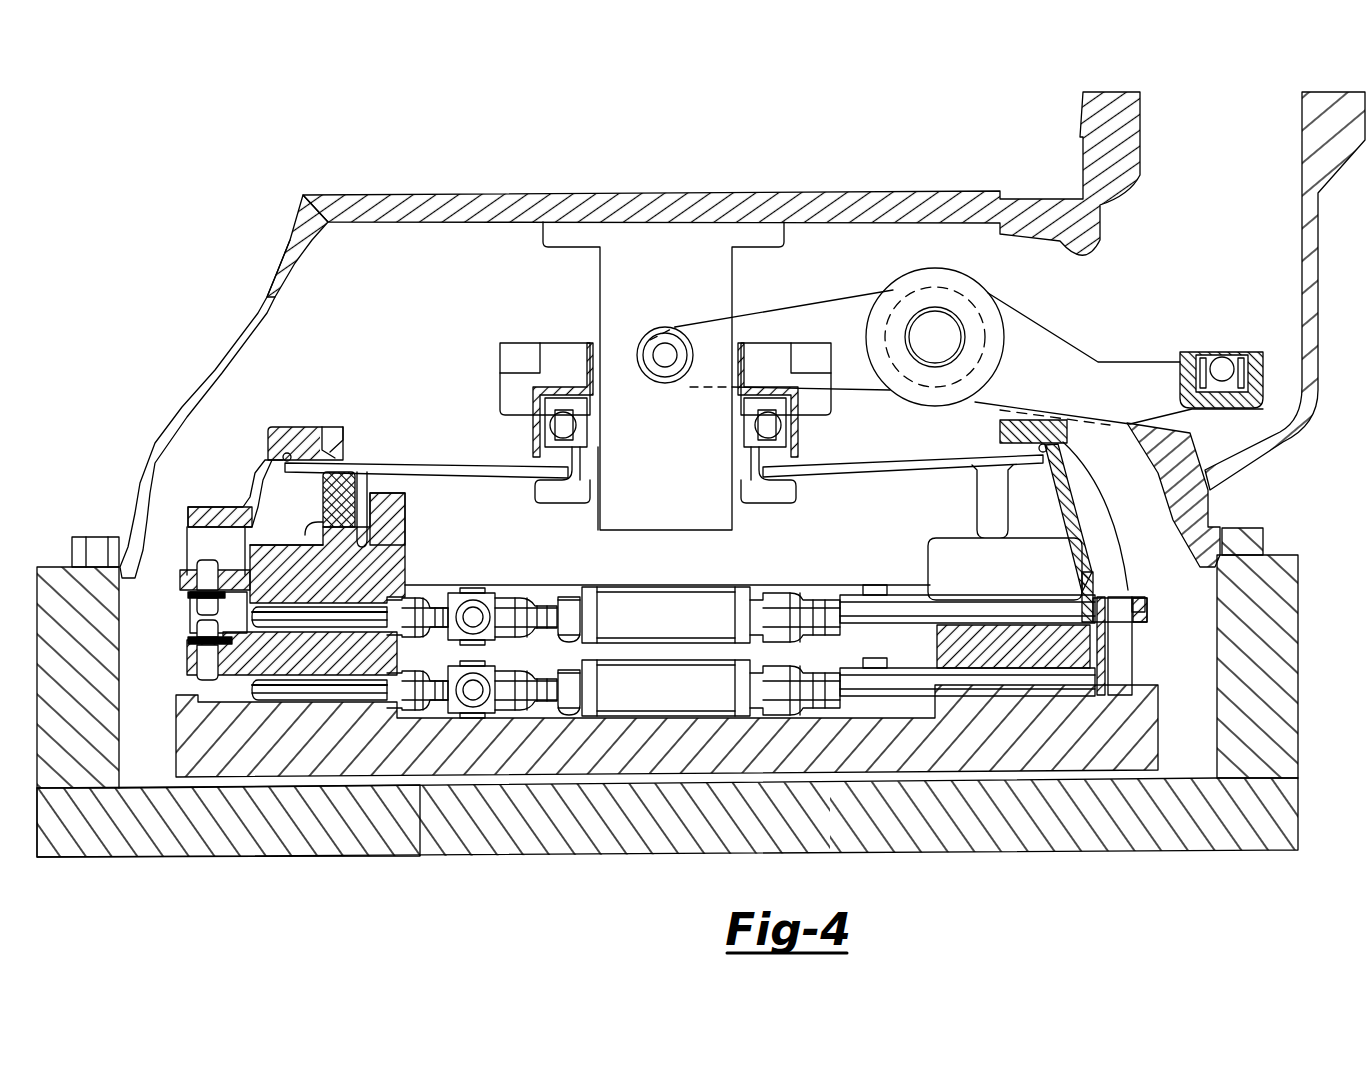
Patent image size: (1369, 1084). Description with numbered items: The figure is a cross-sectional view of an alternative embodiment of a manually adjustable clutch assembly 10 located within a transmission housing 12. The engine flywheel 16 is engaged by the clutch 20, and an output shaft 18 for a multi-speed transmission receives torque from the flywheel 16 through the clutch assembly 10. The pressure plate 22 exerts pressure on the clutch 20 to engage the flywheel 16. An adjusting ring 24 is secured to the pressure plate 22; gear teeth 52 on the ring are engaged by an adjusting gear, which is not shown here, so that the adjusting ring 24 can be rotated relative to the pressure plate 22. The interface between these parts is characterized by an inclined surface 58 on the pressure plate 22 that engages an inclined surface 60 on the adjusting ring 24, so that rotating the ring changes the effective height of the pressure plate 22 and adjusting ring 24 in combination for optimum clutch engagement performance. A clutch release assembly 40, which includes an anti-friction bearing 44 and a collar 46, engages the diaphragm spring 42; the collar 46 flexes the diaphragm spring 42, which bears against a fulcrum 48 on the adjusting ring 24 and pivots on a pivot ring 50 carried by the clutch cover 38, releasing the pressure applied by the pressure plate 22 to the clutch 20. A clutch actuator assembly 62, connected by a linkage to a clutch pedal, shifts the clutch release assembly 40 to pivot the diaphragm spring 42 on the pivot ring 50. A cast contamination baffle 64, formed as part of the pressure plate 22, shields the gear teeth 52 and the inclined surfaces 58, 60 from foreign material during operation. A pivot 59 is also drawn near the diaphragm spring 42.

The clutch assembly 10 is at (316, 354).
The transmission housing 12 is at (279, 274).
The engine flywheel 16 is at (189, 765).
The output shaft 18 is at (717, 267).
The clutch 20 is at (1087, 640).
The pressure plate 22 is at (397, 563).
The adjusting ring 24 is at (323, 492).
The clutch cover 38 is at (268, 430).
The clutch release assembly 40 is at (510, 336).
The diaphragm spring 42 is at (494, 492).
The anti-friction bearing 44 is at (570, 427).
The collar 46 is at (557, 493).
The fulcrum 48 is at (340, 470).
The pivot ring 50 is at (283, 455).
The gear teeth 52 is at (363, 493).
The inclined surface 58 is at (317, 543).
The pivot 59 is at (1048, 450).
The inclined surface 60 is at (320, 521).
The clutch actuator assembly 62 is at (1040, 312).
The cast contamination baffle 64 is at (397, 500).